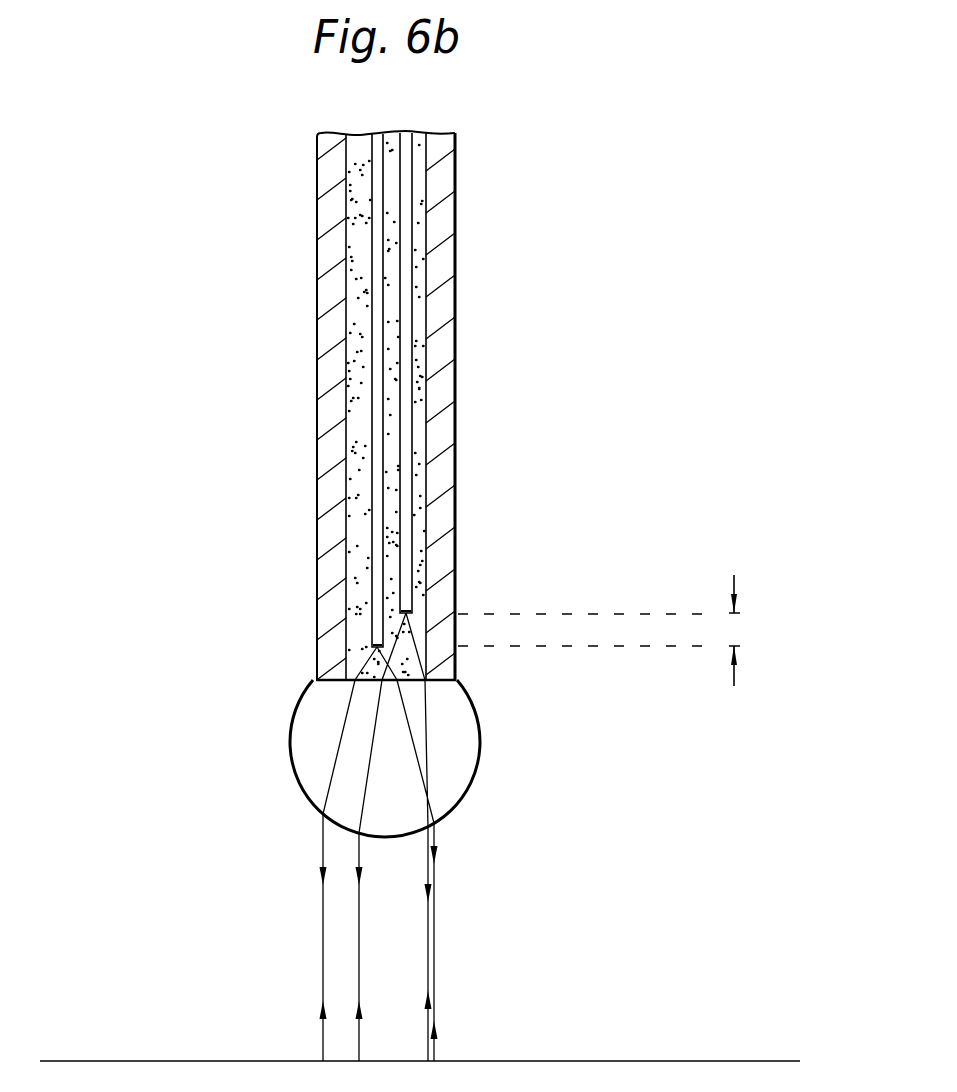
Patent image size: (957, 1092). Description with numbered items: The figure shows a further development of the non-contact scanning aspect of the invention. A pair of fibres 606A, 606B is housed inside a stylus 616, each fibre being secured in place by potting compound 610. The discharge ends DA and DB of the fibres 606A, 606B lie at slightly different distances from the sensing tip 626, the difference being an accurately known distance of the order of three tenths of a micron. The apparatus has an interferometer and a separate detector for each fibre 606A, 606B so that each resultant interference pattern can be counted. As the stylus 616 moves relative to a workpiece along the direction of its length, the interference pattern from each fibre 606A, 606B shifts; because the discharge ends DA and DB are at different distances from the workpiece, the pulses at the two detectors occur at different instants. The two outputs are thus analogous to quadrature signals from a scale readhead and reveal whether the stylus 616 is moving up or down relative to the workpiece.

The potting compound 610 is at (425, 232).
The stylus 616 is at (435, 447).
The fibre 606B is at (380, 303).
The fibre 606A is at (407, 375).
The discharge end DA is at (403, 608).
The discharge end DB is at (377, 641).
The sensing tip 626 is at (448, 782).